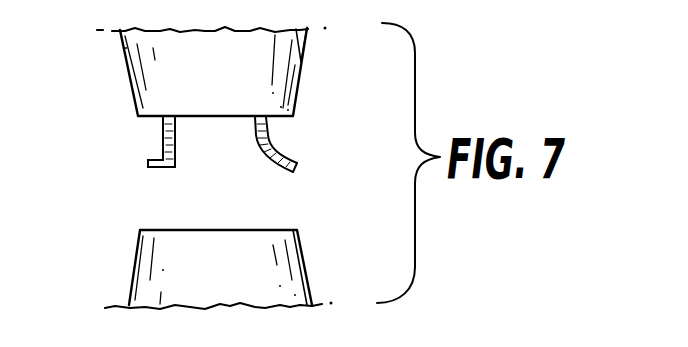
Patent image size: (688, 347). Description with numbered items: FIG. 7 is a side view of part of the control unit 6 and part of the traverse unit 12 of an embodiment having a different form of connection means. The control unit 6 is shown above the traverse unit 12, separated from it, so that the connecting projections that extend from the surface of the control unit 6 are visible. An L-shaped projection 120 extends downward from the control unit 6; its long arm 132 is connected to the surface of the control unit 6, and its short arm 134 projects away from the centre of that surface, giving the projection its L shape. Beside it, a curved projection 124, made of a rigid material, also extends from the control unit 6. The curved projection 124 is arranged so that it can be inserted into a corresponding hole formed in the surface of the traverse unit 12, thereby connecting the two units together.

The control unit 6 is at (312, 98).
The traverse unit 12 is at (320, 276).
The L-shaped projection 120 is at (151, 161).
The curved projection 124 is at (298, 168).
The long arm 132 is at (176, 138).
The short arm 134 is at (156, 168).